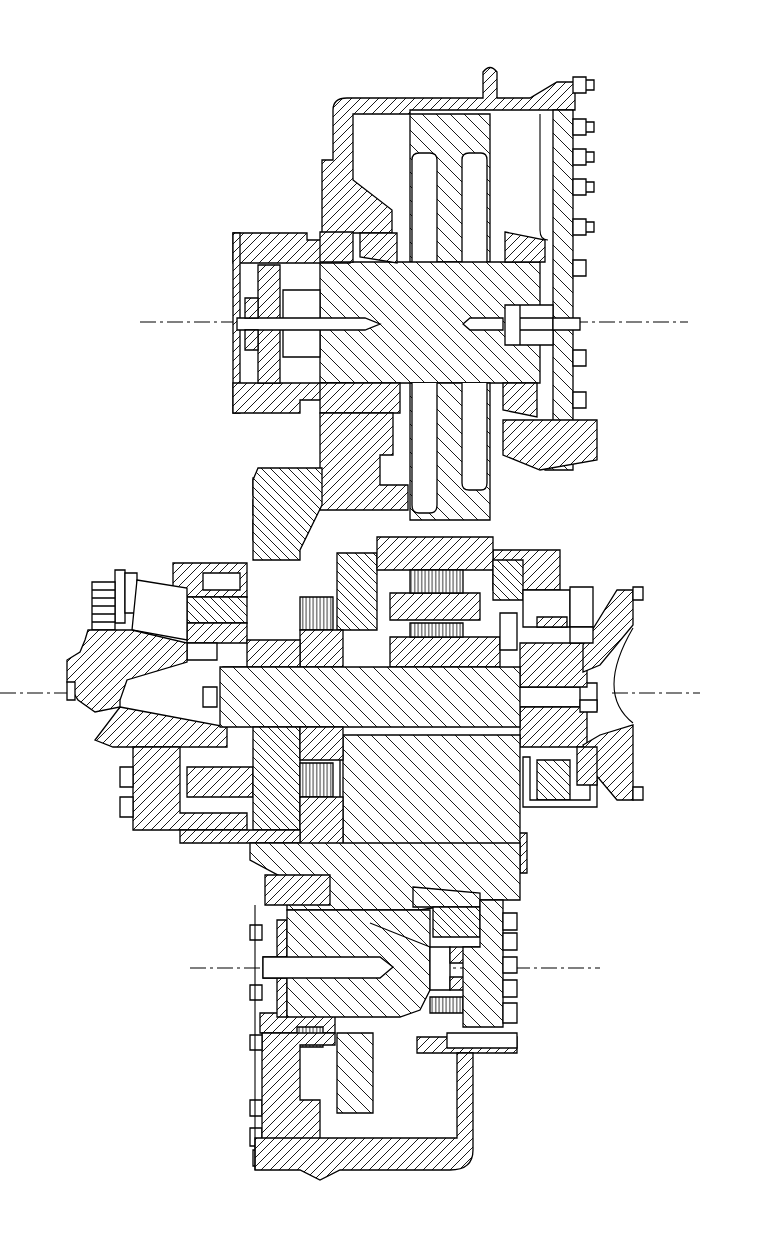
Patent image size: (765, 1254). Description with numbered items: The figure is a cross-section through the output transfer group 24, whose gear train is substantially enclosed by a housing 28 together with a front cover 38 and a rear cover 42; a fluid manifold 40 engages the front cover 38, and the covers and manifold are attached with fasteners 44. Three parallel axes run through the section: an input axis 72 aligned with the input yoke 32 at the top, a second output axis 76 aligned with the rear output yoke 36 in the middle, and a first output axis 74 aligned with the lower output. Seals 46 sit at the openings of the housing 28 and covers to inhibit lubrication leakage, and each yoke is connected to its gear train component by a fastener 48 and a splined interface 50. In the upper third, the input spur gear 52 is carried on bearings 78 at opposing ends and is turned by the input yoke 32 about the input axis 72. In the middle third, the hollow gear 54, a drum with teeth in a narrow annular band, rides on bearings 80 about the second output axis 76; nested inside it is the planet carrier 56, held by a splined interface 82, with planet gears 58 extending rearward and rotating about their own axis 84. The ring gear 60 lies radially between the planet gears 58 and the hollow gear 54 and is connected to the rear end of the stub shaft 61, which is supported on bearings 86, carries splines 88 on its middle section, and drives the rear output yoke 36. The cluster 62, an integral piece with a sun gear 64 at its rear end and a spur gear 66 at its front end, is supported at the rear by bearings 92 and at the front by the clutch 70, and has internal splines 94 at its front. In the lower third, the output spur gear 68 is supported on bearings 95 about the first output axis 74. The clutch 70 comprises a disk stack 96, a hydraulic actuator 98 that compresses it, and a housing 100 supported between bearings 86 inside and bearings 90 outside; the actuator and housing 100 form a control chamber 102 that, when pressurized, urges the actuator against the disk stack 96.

The output transfer group 24 is at (643, 34).
The housing 28 is at (487, 95).
The input yoke 32 is at (240, 232).
The rear output yoke 36 is at (640, 612).
The front cover 38 is at (270, 553).
The fluid manifold 40 is at (115, 668).
The rear cover 42 is at (566, 93).
The fasteners 44 is at (596, 195).
The seals 46 is at (320, 232).
The fasteners 48 is at (240, 322).
The splined interface 50 is at (255, 400).
The input spur gear 52 is at (456, 138).
The hollow gear 54 is at (478, 536).
The planet carrier 56 is at (395, 588).
The planet gears 58 is at (505, 560).
The ring gear 60 is at (510, 570).
The stub shaft 61 is at (408, 706).
The cluster 62 is at (368, 520).
The sun gear 64 is at (572, 645).
The spur gear 66 is at (580, 458).
The output spur gear 68 is at (290, 880).
The clutch 70 is at (255, 845).
The input axis 72 is at (612, 322).
The first output axis 74 is at (560, 968).
The second output axis 76 is at (690, 692).
The bearings 78 is at (392, 233).
The bearings 80 is at (260, 505).
The splined interface 82 is at (435, 543).
The axis 84 is at (600, 580).
The bearings 86 is at (95, 695).
The splines 88 is at (330, 703).
The bearings 90 is at (112, 620).
The bearings 92 is at (590, 707).
The internal splines 94 is at (266, 508).
The bearings 95 is at (417, 1047).
The disk stack 96 is at (262, 470).
The hydraulic actuator 98 is at (265, 540).
The housing 100 is at (95, 600).
The control chamber 102 is at (253, 590).